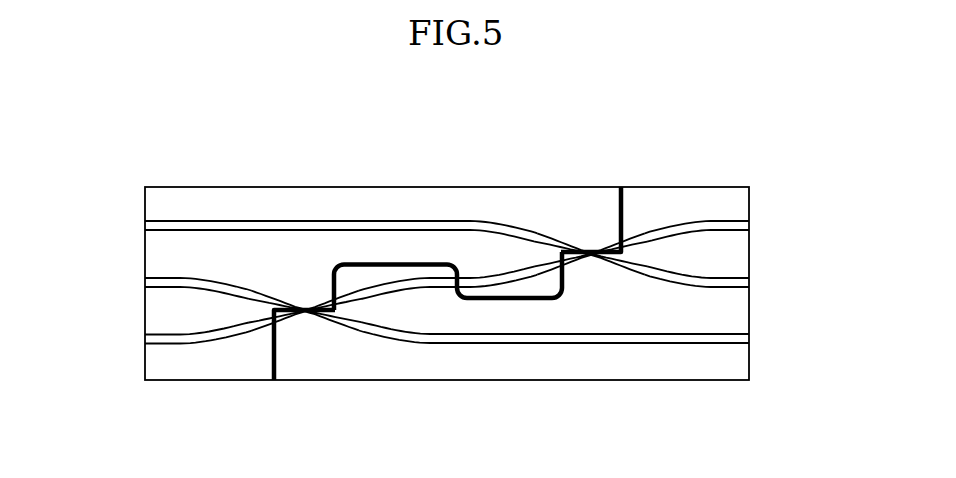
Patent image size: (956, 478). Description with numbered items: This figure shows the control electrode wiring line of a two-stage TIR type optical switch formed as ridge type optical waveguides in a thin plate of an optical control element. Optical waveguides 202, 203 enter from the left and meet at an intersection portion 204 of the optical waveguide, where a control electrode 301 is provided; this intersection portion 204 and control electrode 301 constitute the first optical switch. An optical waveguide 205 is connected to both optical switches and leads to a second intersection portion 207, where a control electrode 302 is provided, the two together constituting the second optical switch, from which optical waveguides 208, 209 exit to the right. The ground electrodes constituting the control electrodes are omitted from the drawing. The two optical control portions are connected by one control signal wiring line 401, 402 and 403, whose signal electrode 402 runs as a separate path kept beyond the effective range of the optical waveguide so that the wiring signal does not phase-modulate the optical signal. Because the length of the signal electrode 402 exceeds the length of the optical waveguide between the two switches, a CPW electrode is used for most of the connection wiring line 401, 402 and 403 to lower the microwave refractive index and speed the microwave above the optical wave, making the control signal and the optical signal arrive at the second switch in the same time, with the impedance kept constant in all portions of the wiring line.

The optical waveguide 202 is at (158, 283).
The optical waveguide 203 is at (168, 342).
The intersection portion 204 is at (309, 332).
The optical waveguide 205 is at (417, 283).
The intersection portion 207 is at (601, 276).
The optical waveguide 208 is at (732, 227).
The optical waveguide 209 is at (732, 282).
The control electrode 301 is at (305, 308).
The control electrode 302 is at (592, 250).
The control signal wiring line 401 is at (272, 352).
The signal electrode 402 is at (396, 263).
The control signal wiring line 403 is at (623, 212).